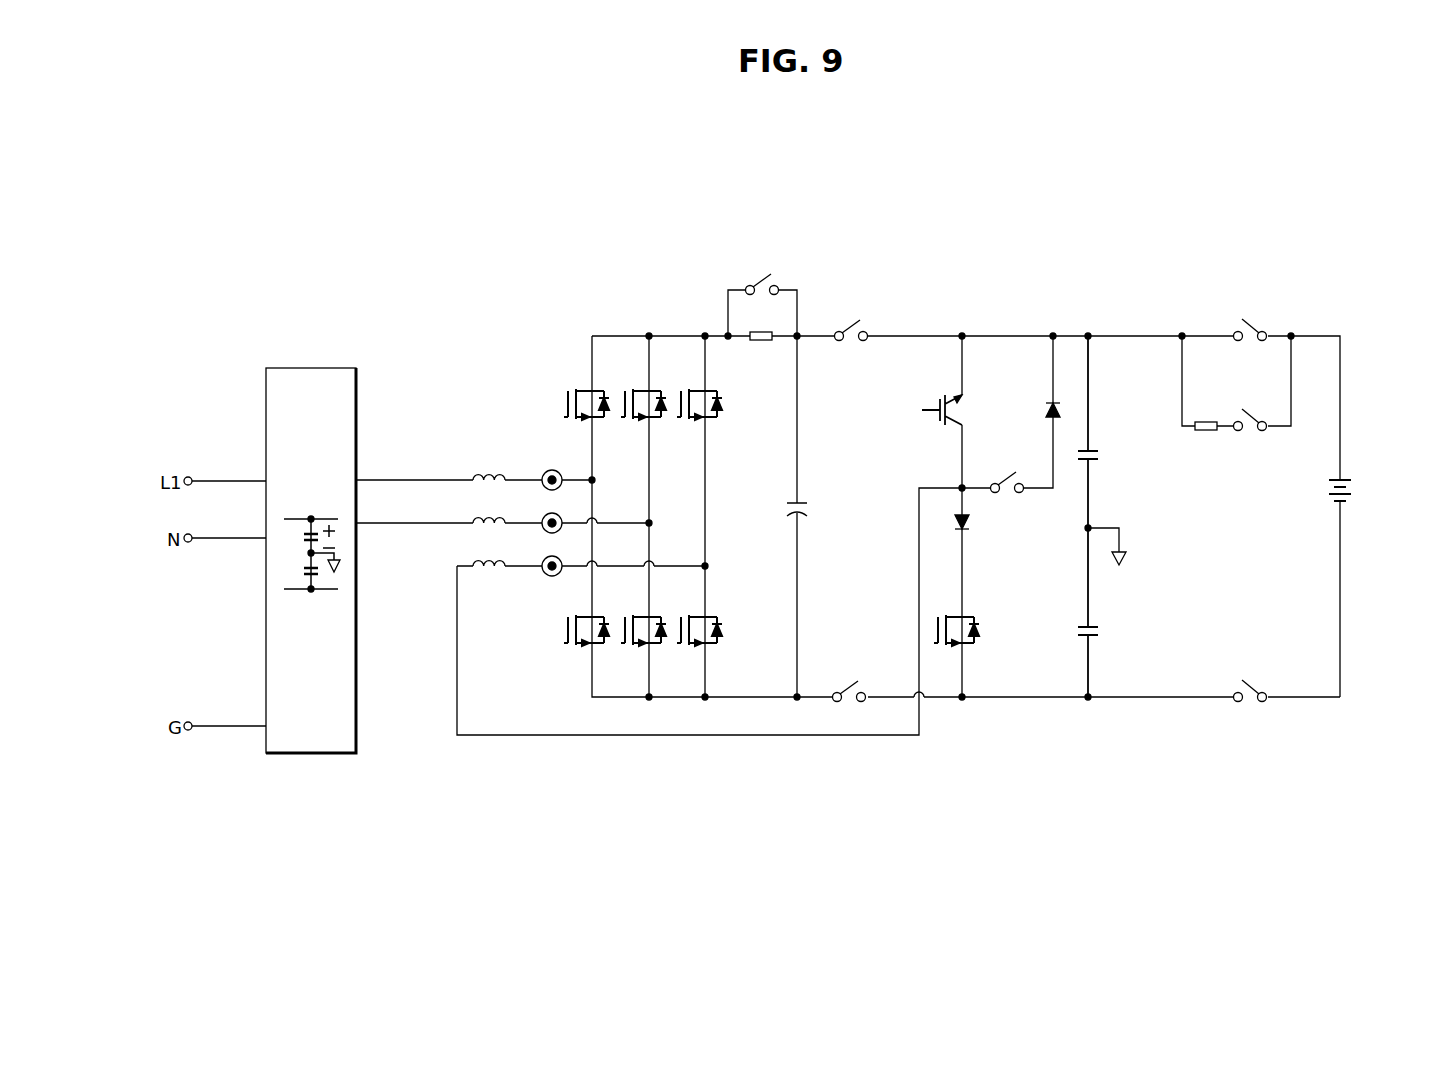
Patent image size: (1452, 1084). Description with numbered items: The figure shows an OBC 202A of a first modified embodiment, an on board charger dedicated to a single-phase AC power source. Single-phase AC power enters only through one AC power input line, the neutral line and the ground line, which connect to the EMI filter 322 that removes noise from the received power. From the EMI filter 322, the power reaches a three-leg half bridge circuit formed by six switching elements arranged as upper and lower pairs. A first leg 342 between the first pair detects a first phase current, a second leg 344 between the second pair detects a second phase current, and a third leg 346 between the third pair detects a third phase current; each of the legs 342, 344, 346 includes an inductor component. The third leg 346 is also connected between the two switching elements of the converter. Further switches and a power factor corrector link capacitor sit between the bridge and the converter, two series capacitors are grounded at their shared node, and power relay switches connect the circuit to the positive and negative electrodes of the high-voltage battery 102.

The high-voltage battery 102 is at (1344, 480).
The OBC 202A is at (584, 245).
The EMI filter 322 is at (312, 755).
The first leg 342 is at (495, 487).
The second leg 344 is at (523, 531).
The third leg 346 is at (601, 574).